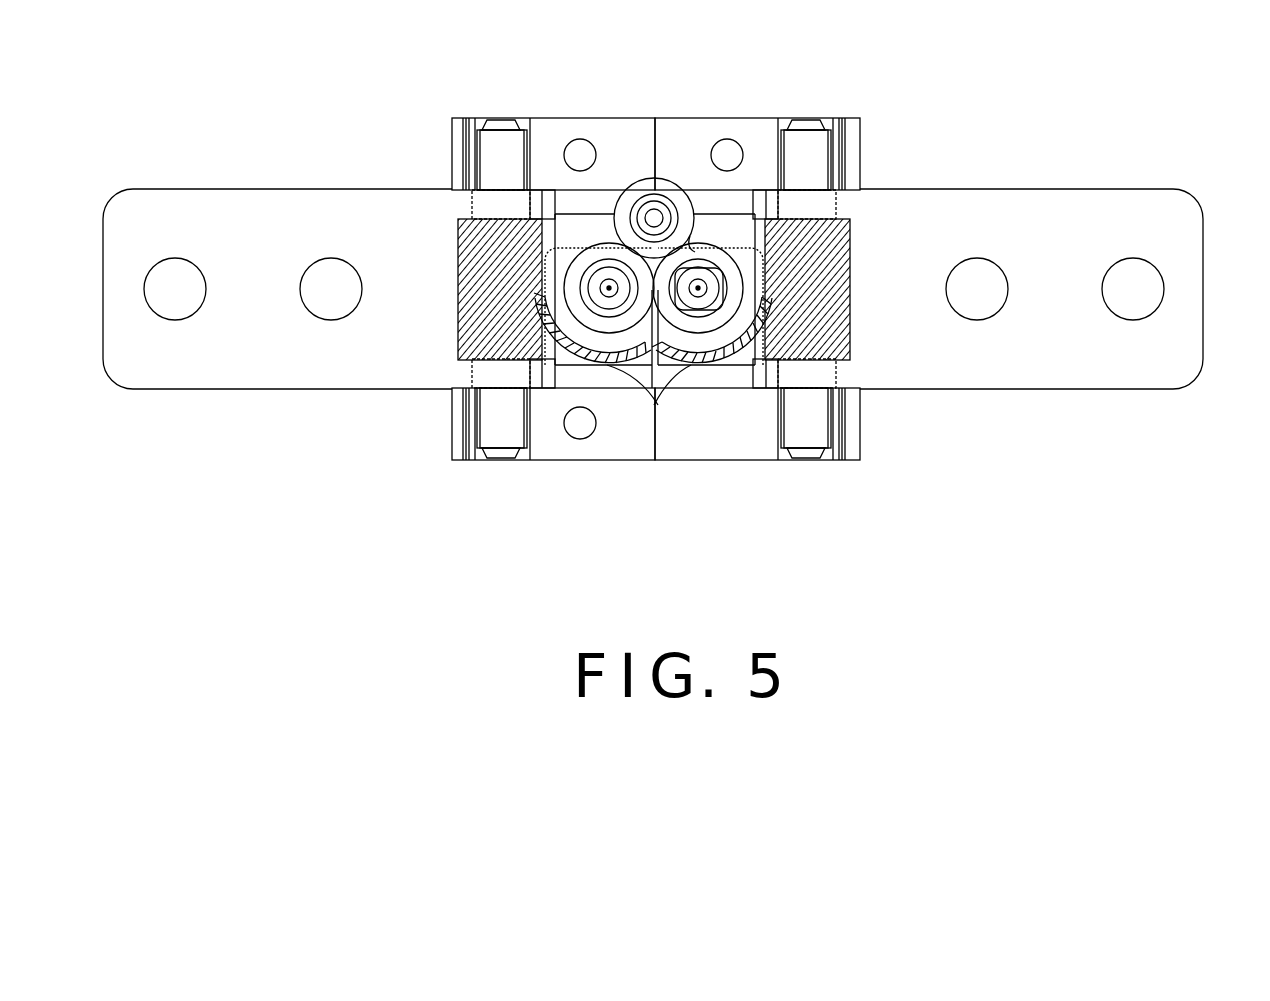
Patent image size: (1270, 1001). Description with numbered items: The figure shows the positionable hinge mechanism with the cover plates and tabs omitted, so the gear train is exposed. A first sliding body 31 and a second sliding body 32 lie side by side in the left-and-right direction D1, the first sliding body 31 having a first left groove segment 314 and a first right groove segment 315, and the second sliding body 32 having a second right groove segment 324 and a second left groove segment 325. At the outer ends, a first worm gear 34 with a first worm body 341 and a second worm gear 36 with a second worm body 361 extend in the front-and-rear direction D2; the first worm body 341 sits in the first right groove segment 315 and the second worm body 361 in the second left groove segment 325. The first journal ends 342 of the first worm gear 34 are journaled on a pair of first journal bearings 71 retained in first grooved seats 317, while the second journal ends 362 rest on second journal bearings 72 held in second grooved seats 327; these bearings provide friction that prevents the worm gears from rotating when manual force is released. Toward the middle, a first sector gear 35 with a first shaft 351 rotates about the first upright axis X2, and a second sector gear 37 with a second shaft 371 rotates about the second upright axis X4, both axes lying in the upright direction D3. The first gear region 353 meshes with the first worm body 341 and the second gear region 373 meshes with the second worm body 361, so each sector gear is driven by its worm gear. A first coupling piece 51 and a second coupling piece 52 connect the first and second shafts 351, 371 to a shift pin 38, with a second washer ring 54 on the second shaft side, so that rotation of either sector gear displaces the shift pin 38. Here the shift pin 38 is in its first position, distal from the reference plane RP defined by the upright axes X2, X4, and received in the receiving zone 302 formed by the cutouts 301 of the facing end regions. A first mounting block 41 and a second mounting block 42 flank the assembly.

The first sliding body 31 is at (672, 450).
The second sliding body 32 is at (597, 450).
The first worm gear 34 is at (855, 343).
The first sector gear 35 is at (735, 365).
The second worm gear 36 is at (450, 343).
The second sector gear 37 is at (573, 365).
The shift pin 38 is at (661, 190).
The first mounting block 41 is at (1108, 165).
The second mounting block 42 is at (220, 183).
The first coupling piece 51 is at (742, 185).
The second coupling piece 52 is at (585, 180).
The second washer ring 54 is at (573, 288).
The first journal bearings 71 is at (845, 157).
The second journal bearings 72 is at (497, 157).
The cutout 301 is at (612, 238).
The receiving zone 302 is at (640, 200).
The first left groove segment 314 is at (738, 210).
The first right groove segment 315 is at (833, 207).
The first grooved seats 317 is at (822, 152).
The second right groove segment 324 is at (606, 288).
The second left groove segment 325 is at (480, 378).
The second grooved seats 327 is at (457, 160).
The first worm body 341 is at (835, 273).
The first journal ends 342 is at (800, 125).
The first shaft 351 is at (813, 190).
The first gear region 353 is at (711, 367).
The second worm body 361 is at (467, 242).
The second journal ends 362 is at (497, 123).
The second shaft 371 is at (535, 172).
The second gear region 373 is at (600, 363).
The reference plane RP is at (657, 320).
The first upright axis X2 is at (708, 170).
The second upright axis X4 is at (609, 288).
The left-and-right direction D1 is at (1157, 578).
The front-and-rear direction D2 is at (1157, 578).
The upright direction D3 is at (1162, 604).